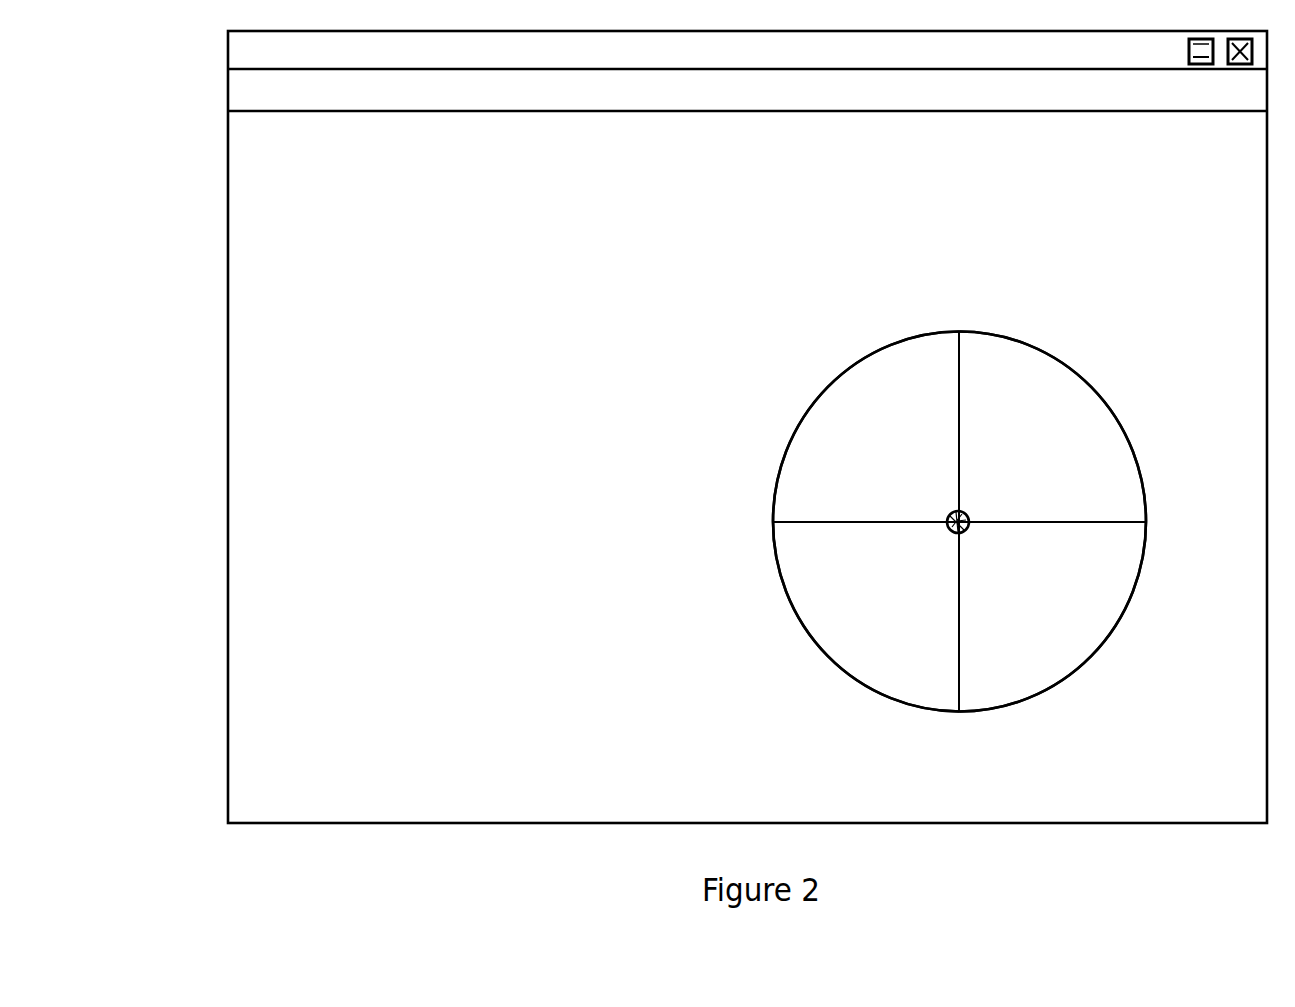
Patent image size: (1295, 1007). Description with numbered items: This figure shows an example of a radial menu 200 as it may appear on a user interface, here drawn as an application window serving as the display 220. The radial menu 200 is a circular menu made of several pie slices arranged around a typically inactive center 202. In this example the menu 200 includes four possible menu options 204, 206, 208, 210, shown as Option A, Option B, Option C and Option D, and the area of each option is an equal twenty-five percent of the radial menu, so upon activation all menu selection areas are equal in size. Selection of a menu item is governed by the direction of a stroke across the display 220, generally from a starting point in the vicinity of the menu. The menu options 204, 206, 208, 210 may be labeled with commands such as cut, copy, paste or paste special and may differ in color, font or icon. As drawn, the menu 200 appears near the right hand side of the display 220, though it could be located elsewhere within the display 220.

The radial menu 200 is at (975, 505).
The center 202 is at (768, 477).
The menu option 204 is at (863, 403).
The menu option 206 is at (1096, 427).
The menu option 208 is at (787, 617).
The menu option 210 is at (1103, 617).
The display 220 is at (698, 427).